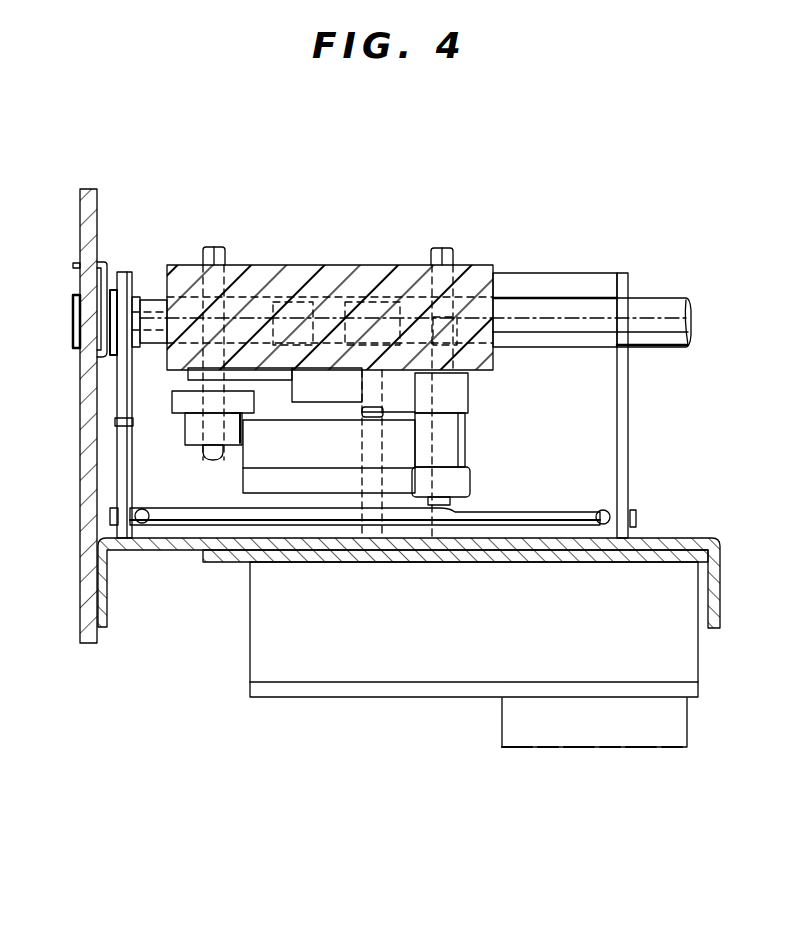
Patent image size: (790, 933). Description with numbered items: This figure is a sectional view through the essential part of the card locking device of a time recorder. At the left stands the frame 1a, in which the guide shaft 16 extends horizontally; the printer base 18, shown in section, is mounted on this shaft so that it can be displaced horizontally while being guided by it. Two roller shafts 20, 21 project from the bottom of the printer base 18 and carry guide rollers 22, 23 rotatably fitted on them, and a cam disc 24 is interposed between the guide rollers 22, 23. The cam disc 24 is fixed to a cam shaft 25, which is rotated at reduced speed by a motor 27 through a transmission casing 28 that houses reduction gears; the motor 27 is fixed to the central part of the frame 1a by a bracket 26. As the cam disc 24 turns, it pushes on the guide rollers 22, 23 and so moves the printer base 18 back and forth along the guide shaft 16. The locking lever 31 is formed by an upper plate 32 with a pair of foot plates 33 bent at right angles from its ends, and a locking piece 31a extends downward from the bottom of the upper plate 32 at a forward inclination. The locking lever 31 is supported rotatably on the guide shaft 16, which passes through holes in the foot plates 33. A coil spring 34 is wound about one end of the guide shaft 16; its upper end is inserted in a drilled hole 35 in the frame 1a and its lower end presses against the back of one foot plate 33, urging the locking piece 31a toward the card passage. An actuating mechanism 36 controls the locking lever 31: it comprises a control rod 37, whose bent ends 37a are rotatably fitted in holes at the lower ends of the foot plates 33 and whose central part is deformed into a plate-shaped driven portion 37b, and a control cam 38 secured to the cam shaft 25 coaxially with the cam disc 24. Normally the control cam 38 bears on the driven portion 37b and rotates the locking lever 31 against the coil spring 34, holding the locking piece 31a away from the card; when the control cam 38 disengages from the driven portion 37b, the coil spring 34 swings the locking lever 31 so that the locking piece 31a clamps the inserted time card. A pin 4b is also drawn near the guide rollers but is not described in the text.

The frame 1a is at (97, 212).
The drilled hole 35 is at (80, 258).
The coil spring 34 is at (108, 362).
The foot plates 33 is at (117, 440).
The printer base 18 is at (268, 265).
The locking piece 31a is at (398, 330).
The roller shaft 20 is at (215, 247).
The roller shaft 21 is at (440, 248).
The locking lever 31 is at (512, 275).
The upper plate 32 is at (568, 285).
The guide shaft 16 is at (647, 300).
The guide roller 22 is at (185, 440).
The cam disc 24 is at (243, 488).
The pin 4b is at (375, 410).
The cam shaft 25 is at (380, 446).
The guide roller 23 is at (470, 482).
The control rod 37 is at (170, 520).
The bent ends 37a is at (110, 516).
The driven portion 37b is at (328, 525).
The control cam 38 is at (248, 560).
The transmission casing 28 is at (250, 660).
The bracket 26 is at (712, 585).
The actuating mechanism 36 is at (372, 570).
The motor 27 is at (503, 715).